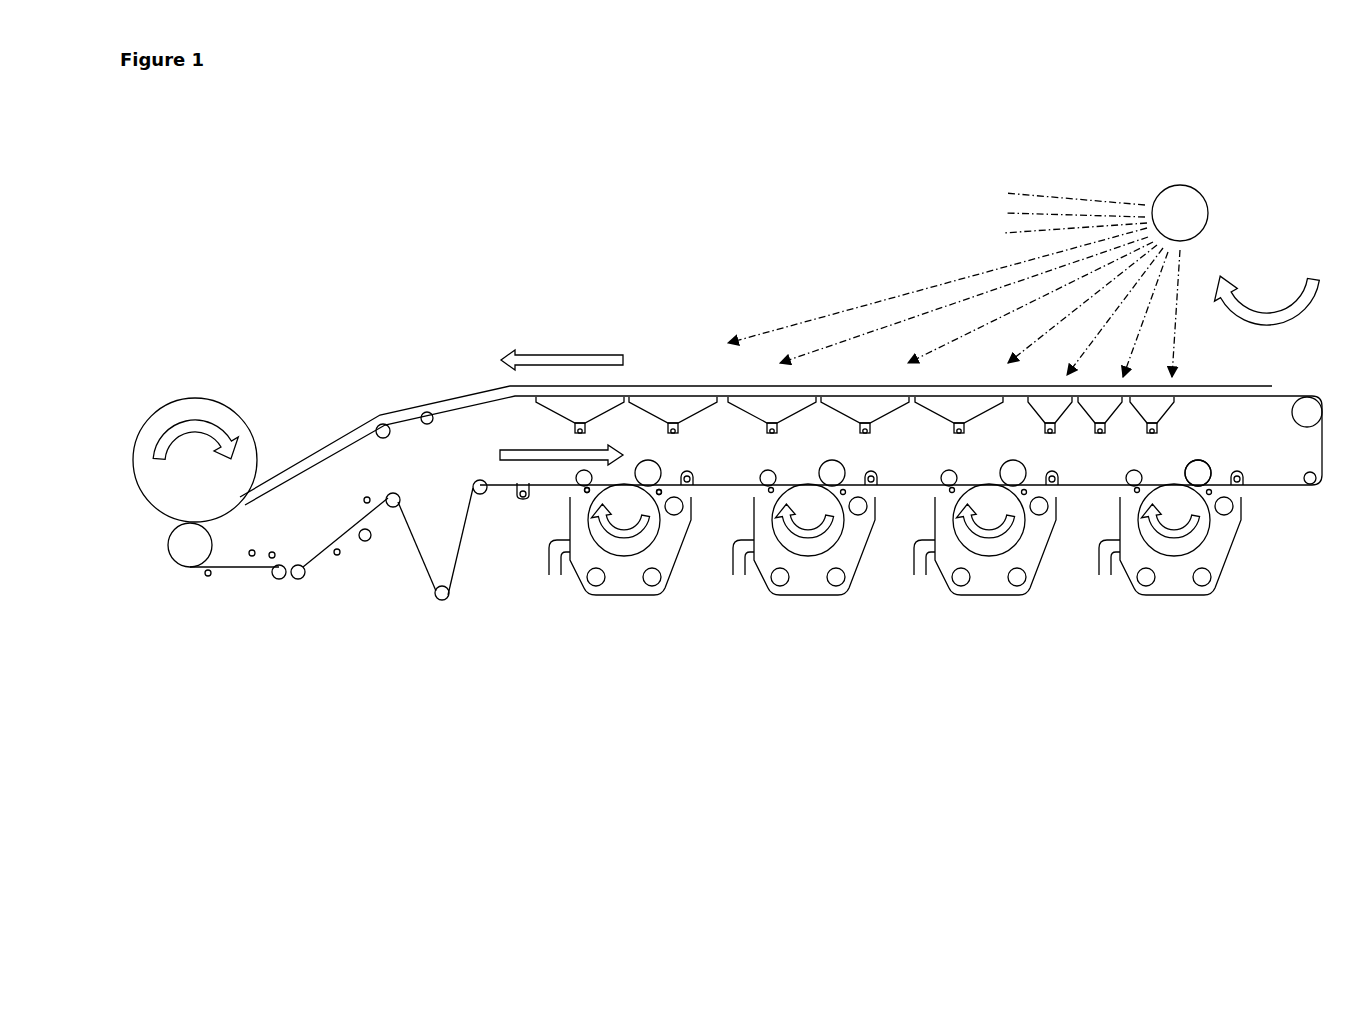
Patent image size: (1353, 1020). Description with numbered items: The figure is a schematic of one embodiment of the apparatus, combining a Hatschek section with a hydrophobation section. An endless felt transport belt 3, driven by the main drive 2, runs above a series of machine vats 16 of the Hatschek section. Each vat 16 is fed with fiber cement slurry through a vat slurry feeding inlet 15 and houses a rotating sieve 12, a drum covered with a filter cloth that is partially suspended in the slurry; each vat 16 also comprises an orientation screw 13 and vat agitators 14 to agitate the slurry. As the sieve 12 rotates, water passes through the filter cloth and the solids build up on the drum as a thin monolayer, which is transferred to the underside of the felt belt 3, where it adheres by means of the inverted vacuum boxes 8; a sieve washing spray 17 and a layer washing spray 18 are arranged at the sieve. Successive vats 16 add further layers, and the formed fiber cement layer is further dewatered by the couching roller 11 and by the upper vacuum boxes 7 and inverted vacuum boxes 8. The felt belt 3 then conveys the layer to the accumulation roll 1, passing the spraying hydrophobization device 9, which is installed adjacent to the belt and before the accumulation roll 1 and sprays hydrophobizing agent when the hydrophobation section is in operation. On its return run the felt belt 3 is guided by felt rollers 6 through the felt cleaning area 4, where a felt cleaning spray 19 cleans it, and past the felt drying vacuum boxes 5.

The accumulation roll 1 is at (195, 453).
The main drive 2 is at (190, 545).
The felt transport belt 3 is at (781, 427).
The felt cleaning area 4 is at (359, 561).
The felt drying vacuum boxes 5 is at (366, 545).
The felt rollers 6 is at (294, 579).
The upper vacuum boxes 7 is at (862, 410).
The inverted vacuum boxes 8 is at (872, 487).
The spraying hydrophobization device 9 is at (971, 281).
The couching roller 11 is at (1192, 457).
The sieve 12 is at (894, 508).
The orientation screw 13 is at (1205, 585).
The vat agitators 14 is at (1142, 584).
The vat slurry feeding inlet 15 is at (548, 574).
The vat 16 is at (613, 596).
The sieve washing spray 17 is at (661, 489).
The layer washing spray 18 is at (590, 487).
The felt cleaning spray 19 is at (206, 576).